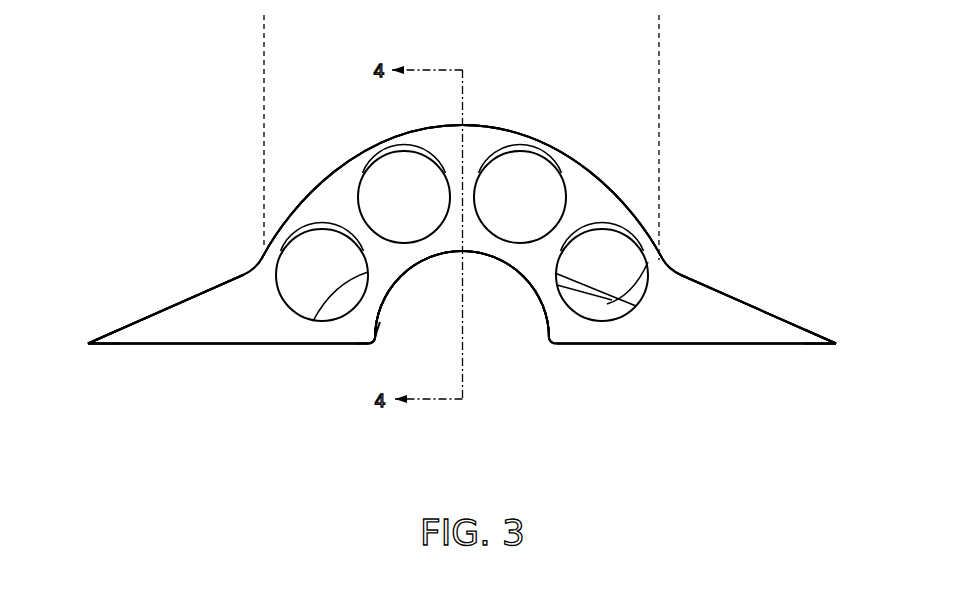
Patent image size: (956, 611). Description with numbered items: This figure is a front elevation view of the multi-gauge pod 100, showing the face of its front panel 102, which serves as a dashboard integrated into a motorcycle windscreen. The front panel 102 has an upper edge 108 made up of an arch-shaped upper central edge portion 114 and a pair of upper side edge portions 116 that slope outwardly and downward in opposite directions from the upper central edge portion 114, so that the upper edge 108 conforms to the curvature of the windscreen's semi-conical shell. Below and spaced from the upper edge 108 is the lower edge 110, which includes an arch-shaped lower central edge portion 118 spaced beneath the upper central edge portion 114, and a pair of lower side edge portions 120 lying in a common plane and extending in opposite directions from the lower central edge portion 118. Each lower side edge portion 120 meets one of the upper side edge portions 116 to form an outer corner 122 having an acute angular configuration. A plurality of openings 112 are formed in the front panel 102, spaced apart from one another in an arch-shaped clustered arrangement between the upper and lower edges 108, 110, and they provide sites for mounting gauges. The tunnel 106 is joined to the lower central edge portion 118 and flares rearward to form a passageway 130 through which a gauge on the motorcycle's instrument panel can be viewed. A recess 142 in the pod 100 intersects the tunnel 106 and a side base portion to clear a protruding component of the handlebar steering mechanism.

The multi-gauge pod 100 is at (700, 87).
The front panel 102 is at (716, 288).
The tunnel 106 is at (323, 300).
The upper edge 108 is at (527, 136).
The lower edge 110 is at (351, 350).
The openings 112 is at (371, 164).
The upper central edge portion 114 is at (264, 26).
The upper side edge portions 116 is at (241, 275).
The lower central edge portion 118 is at (490, 270).
The lower side edge portions 120 is at (200, 346).
The outer corners 122 is at (89, 346).
The passageway 130 is at (405, 322).
The recess 142 is at (648, 262).